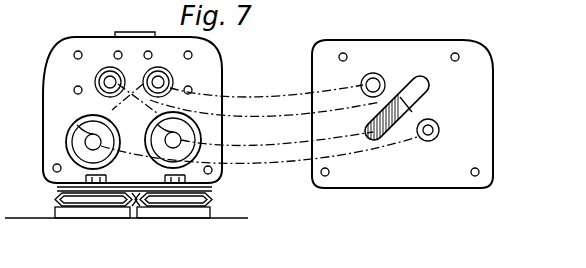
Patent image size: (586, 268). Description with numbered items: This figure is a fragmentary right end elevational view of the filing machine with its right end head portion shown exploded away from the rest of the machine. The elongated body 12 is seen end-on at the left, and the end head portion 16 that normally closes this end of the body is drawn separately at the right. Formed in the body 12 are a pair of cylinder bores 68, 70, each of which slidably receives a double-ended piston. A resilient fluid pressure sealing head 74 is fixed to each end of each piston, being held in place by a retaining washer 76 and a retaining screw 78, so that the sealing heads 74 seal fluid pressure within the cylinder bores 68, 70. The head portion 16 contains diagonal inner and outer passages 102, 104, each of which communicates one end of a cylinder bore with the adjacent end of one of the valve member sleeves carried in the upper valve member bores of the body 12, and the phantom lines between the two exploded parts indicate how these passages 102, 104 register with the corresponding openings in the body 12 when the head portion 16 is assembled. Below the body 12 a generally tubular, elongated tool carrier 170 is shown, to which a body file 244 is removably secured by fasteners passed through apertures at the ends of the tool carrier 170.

The elongated body 12 is at (213, 53).
The end head portion 16 is at (488, 74).
The cylinder bore 68 is at (190, 153).
The cylinder bore 70 is at (73, 167).
The resilient fluid pressure sealing head 74 is at (66, 151).
The retaining washer 76 is at (72, 142).
The retaining screw 78 is at (86, 133).
The diagonal inner passage 102 is at (422, 98).
The diagonal outer passage 104 is at (393, 92).
The tool carrier 170 is at (216, 197).
The body file 244 is at (210, 210).